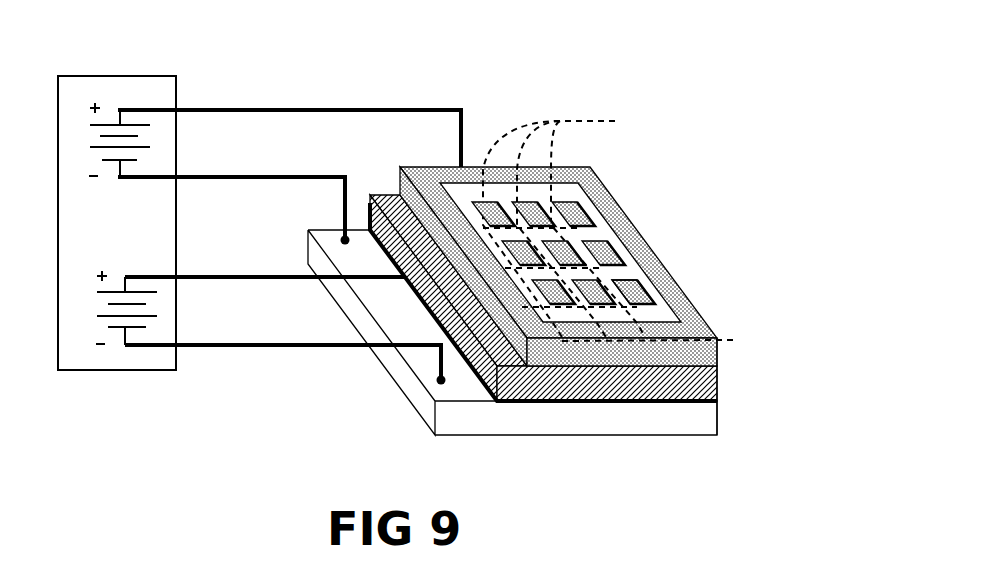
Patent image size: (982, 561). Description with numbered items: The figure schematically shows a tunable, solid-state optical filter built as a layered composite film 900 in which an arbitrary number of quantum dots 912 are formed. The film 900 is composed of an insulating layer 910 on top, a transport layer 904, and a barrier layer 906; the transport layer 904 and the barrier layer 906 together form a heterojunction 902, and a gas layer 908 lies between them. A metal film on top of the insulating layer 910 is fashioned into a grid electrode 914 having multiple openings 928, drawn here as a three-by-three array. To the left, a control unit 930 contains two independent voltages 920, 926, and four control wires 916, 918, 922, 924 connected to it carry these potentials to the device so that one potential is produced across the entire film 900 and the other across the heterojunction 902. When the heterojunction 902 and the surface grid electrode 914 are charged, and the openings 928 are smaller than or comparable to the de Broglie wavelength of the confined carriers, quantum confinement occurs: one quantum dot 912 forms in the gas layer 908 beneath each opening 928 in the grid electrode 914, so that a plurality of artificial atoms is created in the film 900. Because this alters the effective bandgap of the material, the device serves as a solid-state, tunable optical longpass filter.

The layered composite film 900 is at (552, 88).
The heterojunction 902 is at (720, 370).
The transport layer 904 is at (515, 405).
The barrier layer 906 is at (413, 385).
The gas layer 908 is at (587, 403).
The insulating layer 910 is at (630, 228).
The quantum dots 912 is at (631, 231).
The grid electrode 914 is at (625, 253).
The control wire 916 is at (312, 358).
The control wire 918 is at (278, 277).
The voltage 920 is at (161, 305).
The control wire 922 is at (196, 180).
The control wire 924 is at (263, 110).
The voltage 926 is at (160, 139).
The openings 928 is at (650, 285).
The control unit 930 is at (135, 75).